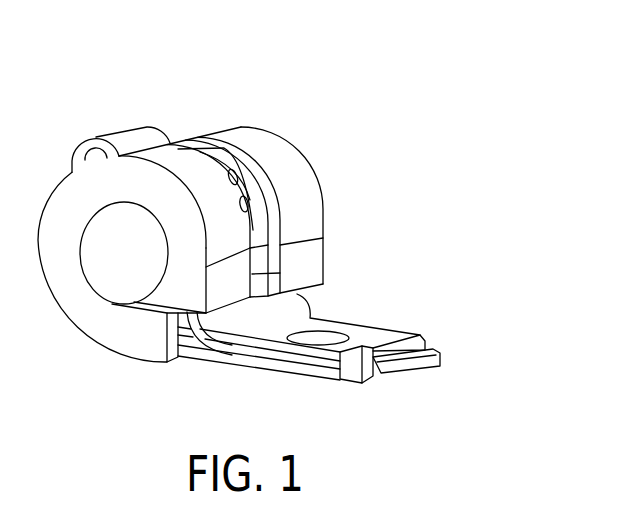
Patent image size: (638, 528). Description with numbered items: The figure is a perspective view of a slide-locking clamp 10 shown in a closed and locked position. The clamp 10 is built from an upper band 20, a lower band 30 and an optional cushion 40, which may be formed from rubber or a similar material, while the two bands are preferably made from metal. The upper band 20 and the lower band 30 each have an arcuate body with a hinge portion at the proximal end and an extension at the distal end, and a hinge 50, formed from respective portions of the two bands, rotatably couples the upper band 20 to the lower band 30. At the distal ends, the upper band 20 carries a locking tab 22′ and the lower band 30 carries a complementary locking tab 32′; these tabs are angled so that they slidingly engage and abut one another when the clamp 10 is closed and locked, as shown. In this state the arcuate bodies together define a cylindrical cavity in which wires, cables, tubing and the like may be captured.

The clamp 10 is at (353, 51).
The upper band 20 is at (378, 300).
The locking tab 22′ is at (353, 386).
The lower band 30 is at (215, 377).
The complementary locking tab 32′ is at (379, 372).
The cushion 40 is at (339, 180).
The hinge 50 is at (88, 116).